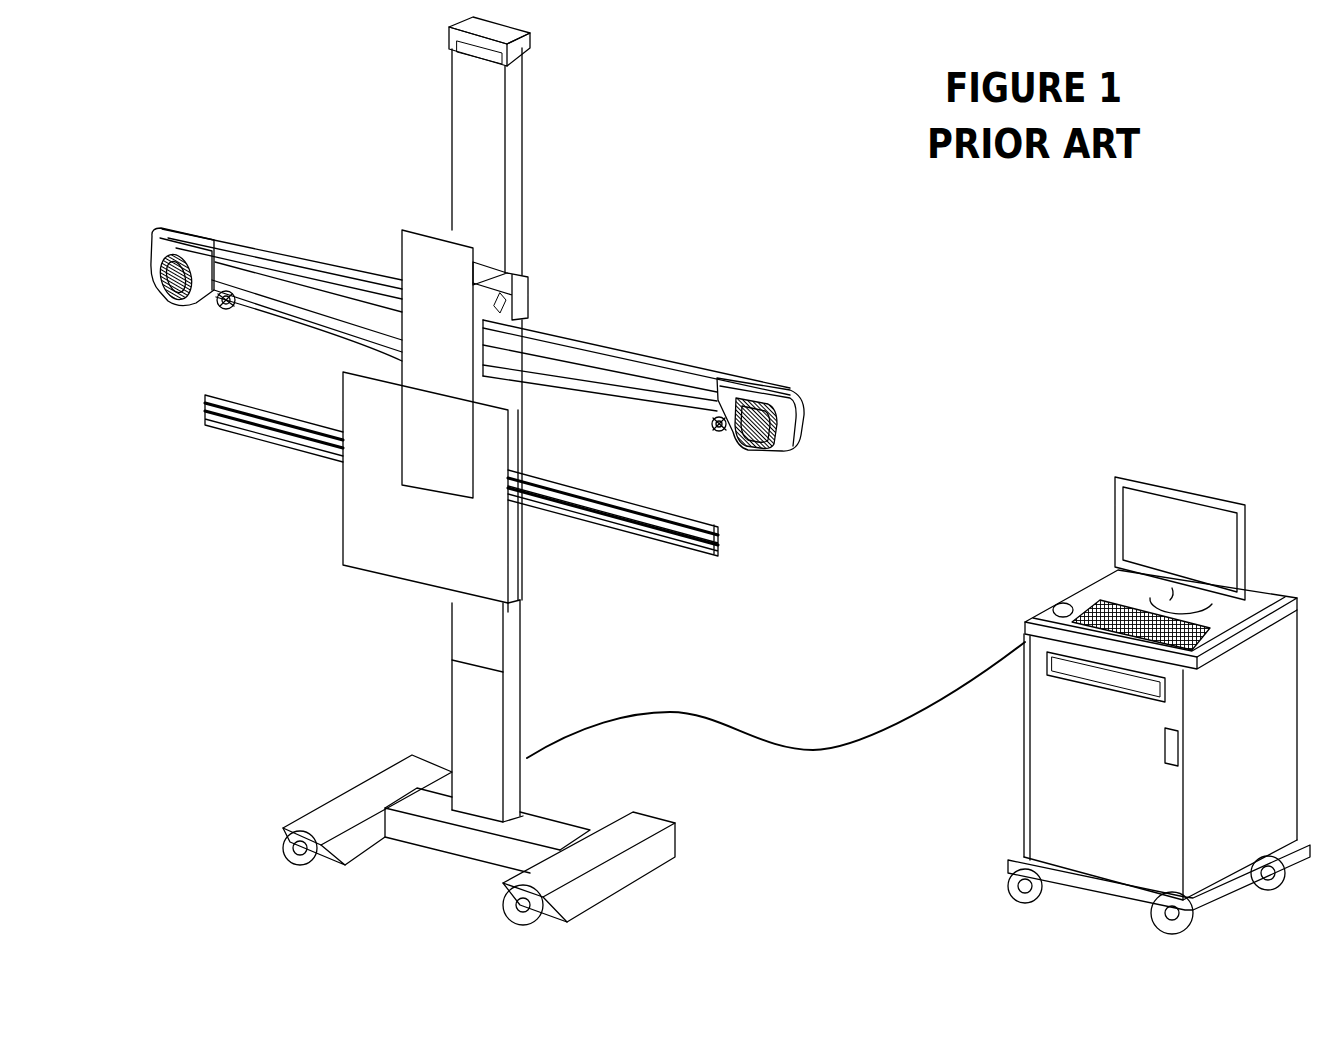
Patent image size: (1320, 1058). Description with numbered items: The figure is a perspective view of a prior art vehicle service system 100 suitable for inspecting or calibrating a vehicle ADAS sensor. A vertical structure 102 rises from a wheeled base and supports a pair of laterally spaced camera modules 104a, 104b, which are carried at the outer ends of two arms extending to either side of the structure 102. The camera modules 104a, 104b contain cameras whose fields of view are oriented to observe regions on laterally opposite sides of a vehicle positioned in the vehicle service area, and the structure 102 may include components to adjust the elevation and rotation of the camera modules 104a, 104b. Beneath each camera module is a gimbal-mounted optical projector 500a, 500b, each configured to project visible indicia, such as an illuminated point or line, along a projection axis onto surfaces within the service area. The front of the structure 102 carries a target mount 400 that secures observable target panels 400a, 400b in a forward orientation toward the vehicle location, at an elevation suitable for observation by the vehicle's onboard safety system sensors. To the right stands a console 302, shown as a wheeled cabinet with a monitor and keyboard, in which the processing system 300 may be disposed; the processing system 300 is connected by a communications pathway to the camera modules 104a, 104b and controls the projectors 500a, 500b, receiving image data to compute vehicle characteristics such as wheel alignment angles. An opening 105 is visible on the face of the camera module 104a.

The vehicle service system 100 is at (459, 471).
The structure 102 is at (431, 419).
The camera module 104a is at (759, 427).
The camera module 104b is at (226, 244).
The detector opening 105 is at (733, 451).
The processing system 300 is at (1115, 699).
The console 302 is at (776, 741).
The target mount 400 is at (454, 475).
The observable target panel 400a is at (371, 487).
The observable target panel 400b is at (366, 364).
The optical projector 500a is at (663, 446).
The optical projector 500b is at (162, 337).